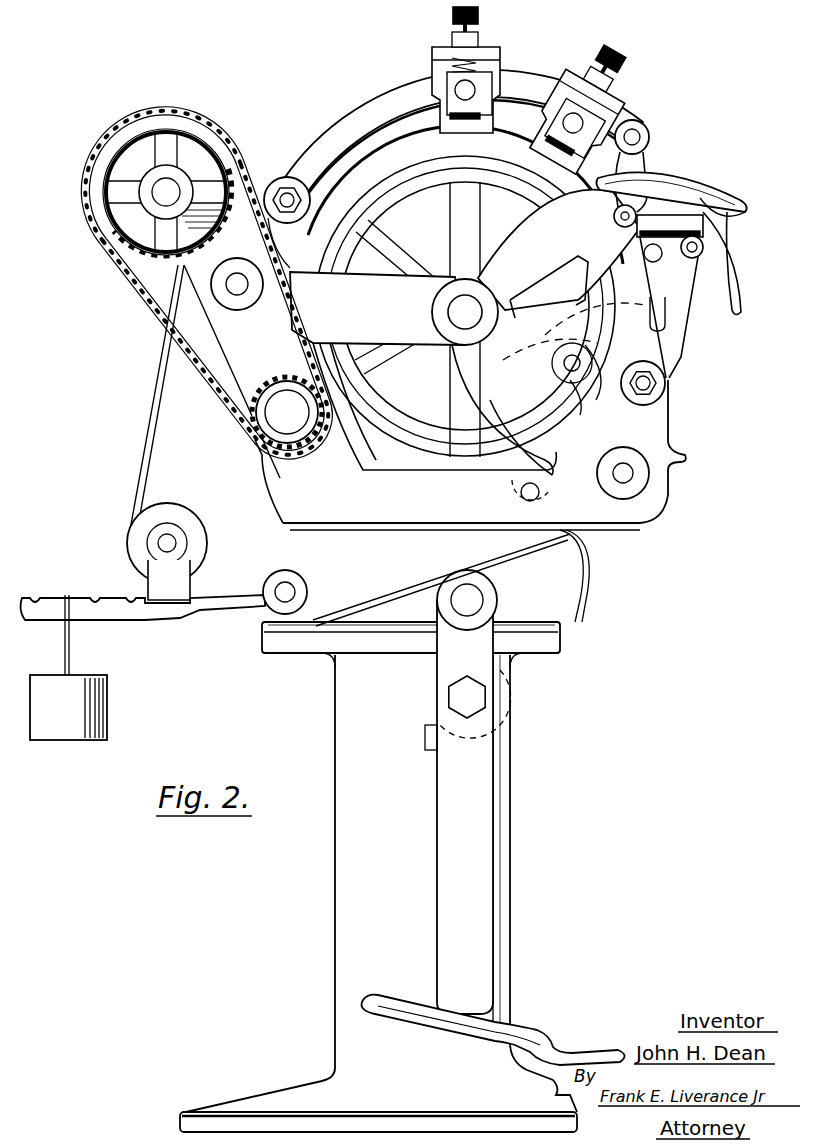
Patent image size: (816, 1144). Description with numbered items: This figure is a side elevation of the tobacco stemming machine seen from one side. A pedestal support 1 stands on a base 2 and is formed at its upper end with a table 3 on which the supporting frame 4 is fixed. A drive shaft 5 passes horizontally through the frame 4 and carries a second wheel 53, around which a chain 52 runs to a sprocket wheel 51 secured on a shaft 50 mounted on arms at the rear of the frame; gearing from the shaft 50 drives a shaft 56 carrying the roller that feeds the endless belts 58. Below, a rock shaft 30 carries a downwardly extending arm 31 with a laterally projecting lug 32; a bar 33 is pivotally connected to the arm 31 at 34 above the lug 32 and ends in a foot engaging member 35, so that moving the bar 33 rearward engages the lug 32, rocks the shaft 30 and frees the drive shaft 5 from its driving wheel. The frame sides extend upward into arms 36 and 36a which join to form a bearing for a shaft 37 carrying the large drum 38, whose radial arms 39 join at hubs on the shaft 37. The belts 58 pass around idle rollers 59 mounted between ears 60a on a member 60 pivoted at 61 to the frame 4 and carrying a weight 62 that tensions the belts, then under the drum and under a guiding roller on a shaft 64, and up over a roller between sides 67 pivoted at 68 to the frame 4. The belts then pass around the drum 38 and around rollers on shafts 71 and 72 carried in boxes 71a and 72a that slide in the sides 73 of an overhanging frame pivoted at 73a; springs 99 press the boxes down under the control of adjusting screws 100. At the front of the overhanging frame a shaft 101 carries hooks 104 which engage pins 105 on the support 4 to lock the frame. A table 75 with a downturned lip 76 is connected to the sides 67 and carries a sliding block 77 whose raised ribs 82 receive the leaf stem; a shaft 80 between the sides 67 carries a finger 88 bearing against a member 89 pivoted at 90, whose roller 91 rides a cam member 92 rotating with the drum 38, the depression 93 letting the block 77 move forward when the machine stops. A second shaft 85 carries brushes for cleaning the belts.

The pedestal support 1 is at (356, 866).
The base 2 is at (278, 1120).
The table 3 is at (542, 645).
The supporting frame 4 is at (562, 574).
The drive shaft 5 is at (290, 428).
The rock shaft 30 is at (470, 600).
The downwardly extending arm 31 is at (447, 657).
The laterally projecting lug 32 is at (427, 737).
The bar 33 is at (490, 780).
The pivot 34 is at (480, 705).
The foot engaging member 35 is at (493, 1027).
The arm 36 is at (533, 262).
The arm 36a is at (368, 323).
The shaft 37 is at (455, 327).
The drum 38 is at (413, 170).
The radial arms 39 is at (457, 233).
The shaft 50 is at (160, 192).
The sprocket wheel 51 is at (135, 295).
The chain 52 is at (172, 330).
The second wheel 53 is at (242, 420).
The shaft 56 is at (238, 294).
The endless belts 58 is at (148, 453).
The idle rollers 59 is at (170, 515).
The member 60 is at (143, 613).
The ears 60a is at (183, 557).
The pivot 61 is at (292, 588).
The weight 62 is at (90, 695).
The shaft 64 is at (623, 484).
The sides 67 is at (677, 337).
The pivot 68 is at (650, 383).
The shaft 71 is at (458, 92).
The box 71a is at (480, 80).
The shaft 72 is at (582, 123).
The box 72a is at (650, 106).
The sides of overhanging frame 73 is at (365, 115).
The pivotal connection 73a is at (287, 195).
The table 75 is at (713, 203).
The lip 76 is at (738, 270).
The block 77 is at (665, 180).
The shaft 80 is at (702, 245).
The raised ribs 82 is at (673, 167).
The second shaft 85 is at (653, 260).
The finger 88 is at (683, 297).
The member 89 is at (588, 338).
The pivot 90 is at (540, 492).
The roller 91 is at (596, 388).
The cam member 92 is at (462, 187).
The depression 93 is at (543, 327).
The springs 99 is at (477, 62).
The adjusting screws 100 is at (478, 24).
The shaft 101 is at (650, 133).
The hooks 104 is at (617, 200).
The pins 105 is at (623, 227).